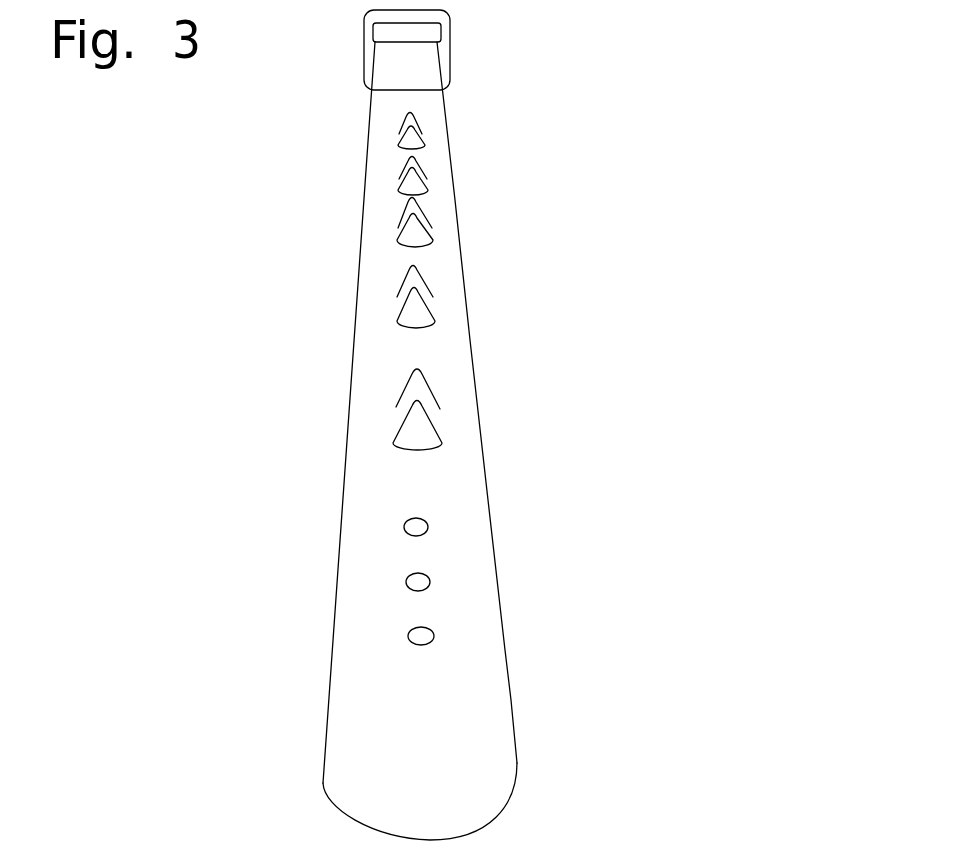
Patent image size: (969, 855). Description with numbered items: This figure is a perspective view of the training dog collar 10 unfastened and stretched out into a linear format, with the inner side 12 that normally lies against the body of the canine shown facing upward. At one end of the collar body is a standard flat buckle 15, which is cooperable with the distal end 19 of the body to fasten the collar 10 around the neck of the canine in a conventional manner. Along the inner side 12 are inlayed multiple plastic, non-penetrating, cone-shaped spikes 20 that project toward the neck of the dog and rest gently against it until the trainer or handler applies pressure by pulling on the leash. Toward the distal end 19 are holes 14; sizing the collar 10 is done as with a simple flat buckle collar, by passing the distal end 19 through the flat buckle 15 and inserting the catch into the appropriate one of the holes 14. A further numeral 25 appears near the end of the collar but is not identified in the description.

The training dog collar 10 is at (568, 158).
The inner side 12 is at (397, 492).
The holes 14 is at (433, 631).
The flat buckle 15 is at (451, 39).
The distal end 19 is at (406, 792).
The cone-shaped spikes 20 is at (405, 136).
The tip 25 is at (272, 847).